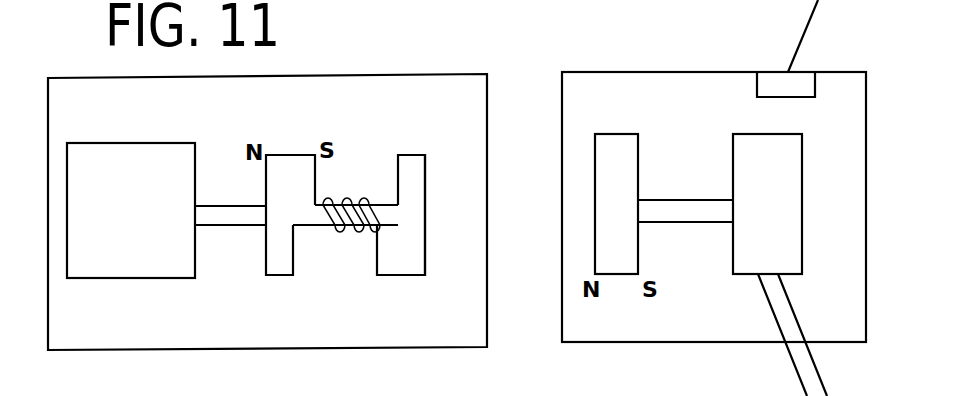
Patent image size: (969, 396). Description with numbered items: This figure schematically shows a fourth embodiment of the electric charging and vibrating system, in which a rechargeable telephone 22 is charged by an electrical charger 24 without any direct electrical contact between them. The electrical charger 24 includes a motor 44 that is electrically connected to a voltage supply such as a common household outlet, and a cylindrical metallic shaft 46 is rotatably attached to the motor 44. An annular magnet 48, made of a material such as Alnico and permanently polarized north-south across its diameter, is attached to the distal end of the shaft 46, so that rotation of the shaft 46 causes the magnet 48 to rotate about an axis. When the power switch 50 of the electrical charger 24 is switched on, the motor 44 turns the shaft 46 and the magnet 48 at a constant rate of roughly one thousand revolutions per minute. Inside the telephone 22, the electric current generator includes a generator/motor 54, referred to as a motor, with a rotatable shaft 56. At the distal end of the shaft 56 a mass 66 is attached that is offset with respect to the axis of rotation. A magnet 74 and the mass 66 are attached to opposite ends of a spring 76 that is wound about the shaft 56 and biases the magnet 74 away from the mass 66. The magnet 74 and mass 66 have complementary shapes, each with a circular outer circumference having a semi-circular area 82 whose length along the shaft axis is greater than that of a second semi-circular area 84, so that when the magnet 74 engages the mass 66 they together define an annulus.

The rechargeable telephone 22 is at (464, 88).
The generator/motor 54 is at (145, 150).
The rotatable shaft 56 is at (218, 207).
The magnet 74 is at (346, 201).
The semi-circular area 82 is at (282, 160).
The second semi-circular area 84 is at (413, 162).
The spring 76 is at (337, 240).
The mass 66 is at (437, 164).
The electrical charger 24 is at (840, 85).
The power switch 50 is at (803, 46).
The annular magnet 48 is at (618, 153).
The motor 44 is at (790, 168).
The shaft 46 is at (667, 205).